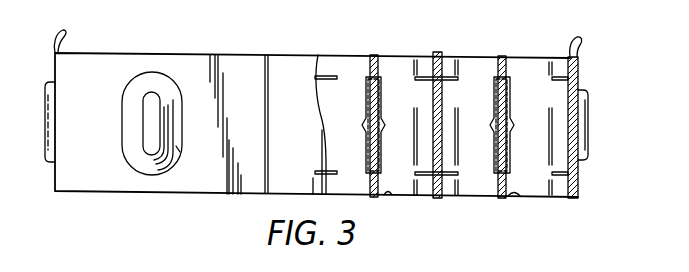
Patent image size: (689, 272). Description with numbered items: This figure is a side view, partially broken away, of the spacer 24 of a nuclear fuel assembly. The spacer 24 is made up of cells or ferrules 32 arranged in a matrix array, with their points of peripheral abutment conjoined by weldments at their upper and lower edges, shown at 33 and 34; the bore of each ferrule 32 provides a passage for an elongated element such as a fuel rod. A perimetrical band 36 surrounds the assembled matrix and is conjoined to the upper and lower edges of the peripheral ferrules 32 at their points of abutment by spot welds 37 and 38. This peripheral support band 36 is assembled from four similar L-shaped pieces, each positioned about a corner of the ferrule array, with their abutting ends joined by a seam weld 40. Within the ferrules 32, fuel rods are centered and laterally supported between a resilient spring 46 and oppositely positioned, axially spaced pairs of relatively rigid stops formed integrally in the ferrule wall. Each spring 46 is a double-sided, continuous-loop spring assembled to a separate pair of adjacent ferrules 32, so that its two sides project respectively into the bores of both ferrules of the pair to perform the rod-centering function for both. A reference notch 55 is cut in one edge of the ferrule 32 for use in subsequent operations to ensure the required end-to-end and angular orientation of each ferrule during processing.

The spacer 24 is at (483, 40).
The ferrule 32 is at (390, 54).
The weldment 33 is at (438, 58).
The weldment 34 is at (371, 197).
The perimetrical band 36 is at (285, 68).
The spot weld 37 is at (566, 58).
The spot weld 38 is at (573, 198).
The seam weld 40 is at (268, 147).
The resilient spring 46 is at (384, 123).
The reference notch 55 is at (394, 196).